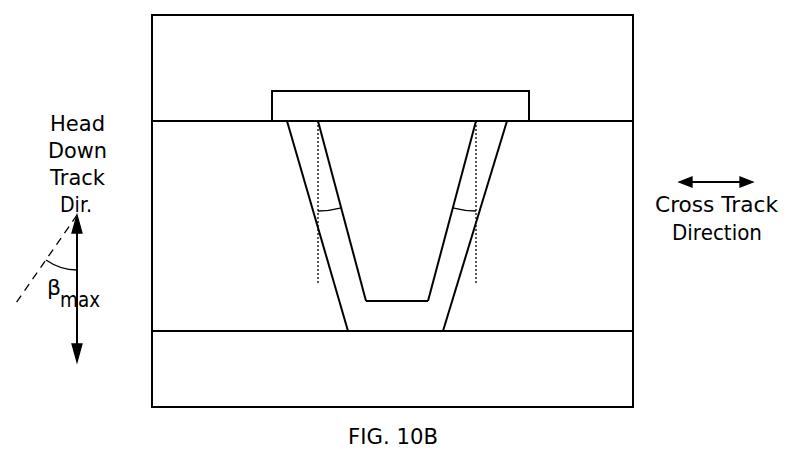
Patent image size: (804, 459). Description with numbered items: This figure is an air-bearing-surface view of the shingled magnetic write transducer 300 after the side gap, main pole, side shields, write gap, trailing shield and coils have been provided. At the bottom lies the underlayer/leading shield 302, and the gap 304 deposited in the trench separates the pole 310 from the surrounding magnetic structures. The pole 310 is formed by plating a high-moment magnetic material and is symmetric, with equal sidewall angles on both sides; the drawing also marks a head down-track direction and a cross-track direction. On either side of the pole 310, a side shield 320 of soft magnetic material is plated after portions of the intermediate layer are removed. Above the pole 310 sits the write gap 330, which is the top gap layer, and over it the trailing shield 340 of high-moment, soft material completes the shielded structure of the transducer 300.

The shingled magnetic write transducer 300 is at (110, 42).
The underlayer/leading shield 302 is at (392, 363).
The gap 304 is at (397, 314).
The pole 310 is at (397, 211).
The side shield 320 is at (393, 226).
The write gap 330 is at (272, 104).
The trailing shield 340 is at (392, 78).